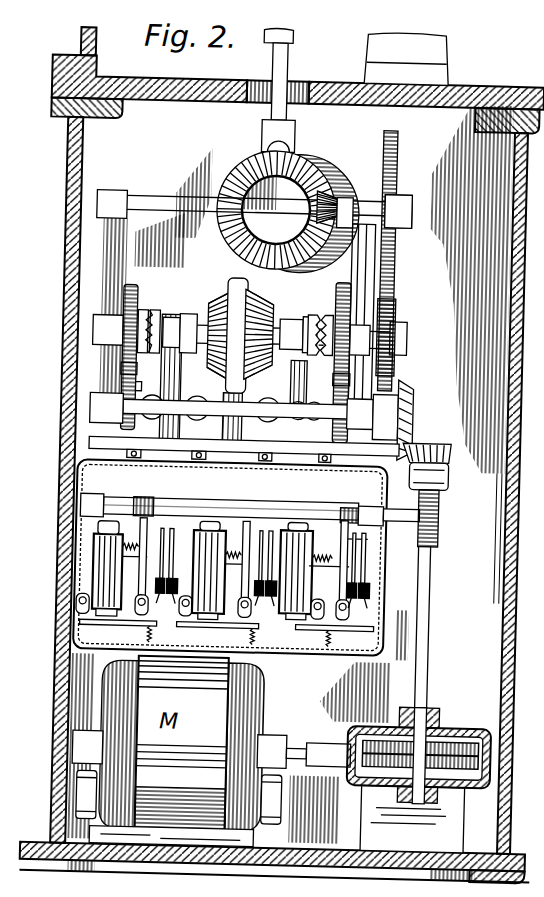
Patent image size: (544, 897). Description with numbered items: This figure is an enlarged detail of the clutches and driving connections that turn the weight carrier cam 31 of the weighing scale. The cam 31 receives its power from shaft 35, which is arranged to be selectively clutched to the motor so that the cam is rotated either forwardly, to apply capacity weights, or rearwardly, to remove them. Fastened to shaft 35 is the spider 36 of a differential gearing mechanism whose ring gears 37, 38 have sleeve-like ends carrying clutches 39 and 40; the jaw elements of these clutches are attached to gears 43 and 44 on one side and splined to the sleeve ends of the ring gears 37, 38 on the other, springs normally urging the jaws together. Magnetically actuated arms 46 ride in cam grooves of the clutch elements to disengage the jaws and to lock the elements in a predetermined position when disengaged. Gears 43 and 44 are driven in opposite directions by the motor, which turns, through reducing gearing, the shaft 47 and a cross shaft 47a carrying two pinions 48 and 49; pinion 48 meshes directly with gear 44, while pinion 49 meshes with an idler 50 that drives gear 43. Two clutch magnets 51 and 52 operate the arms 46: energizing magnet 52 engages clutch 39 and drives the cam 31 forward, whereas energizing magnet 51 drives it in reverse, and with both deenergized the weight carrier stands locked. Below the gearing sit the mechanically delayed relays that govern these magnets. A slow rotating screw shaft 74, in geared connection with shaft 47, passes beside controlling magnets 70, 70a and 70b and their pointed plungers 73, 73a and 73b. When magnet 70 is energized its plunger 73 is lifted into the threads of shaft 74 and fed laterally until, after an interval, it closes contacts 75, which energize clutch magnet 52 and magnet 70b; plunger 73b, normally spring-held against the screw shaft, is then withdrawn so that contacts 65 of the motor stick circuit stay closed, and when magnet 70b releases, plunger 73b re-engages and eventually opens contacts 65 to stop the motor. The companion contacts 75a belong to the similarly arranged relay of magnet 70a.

The cam 31 is at (321, 162).
The shaft 35 is at (405, 336).
The spider 36 is at (231, 281).
The ring gear 37 is at (208, 297).
The ring gear 38 is at (263, 310).
The clutch 39 is at (326, 312).
The clutch 40 is at (154, 313).
The gear 43 is at (147, 276).
The gear 44 is at (347, 295).
The magnetically actuated arm 46 is at (346, 378).
The shaft 47 is at (433, 629).
The cross shaft 47a is at (223, 417).
The pinion 48 is at (355, 446).
The pinion 49 is at (108, 429).
The idler 50 is at (124, 384).
The clutch magnet 51 is at (142, 396).
The clutch magnet 52 is at (399, 398).
The contacts 65 is at (374, 540).
The controlling magnet 70 is at (108, 569).
The solenoid 70a is at (225, 617).
The magnet 70b is at (273, 618).
The pointed plunger 73 is at (152, 525).
The lever 73a is at (262, 530).
The plunger 73b is at (308, 563).
The screw shaft 74 is at (144, 523).
The contacts 75 is at (168, 530).
The contact 75a is at (303, 530).